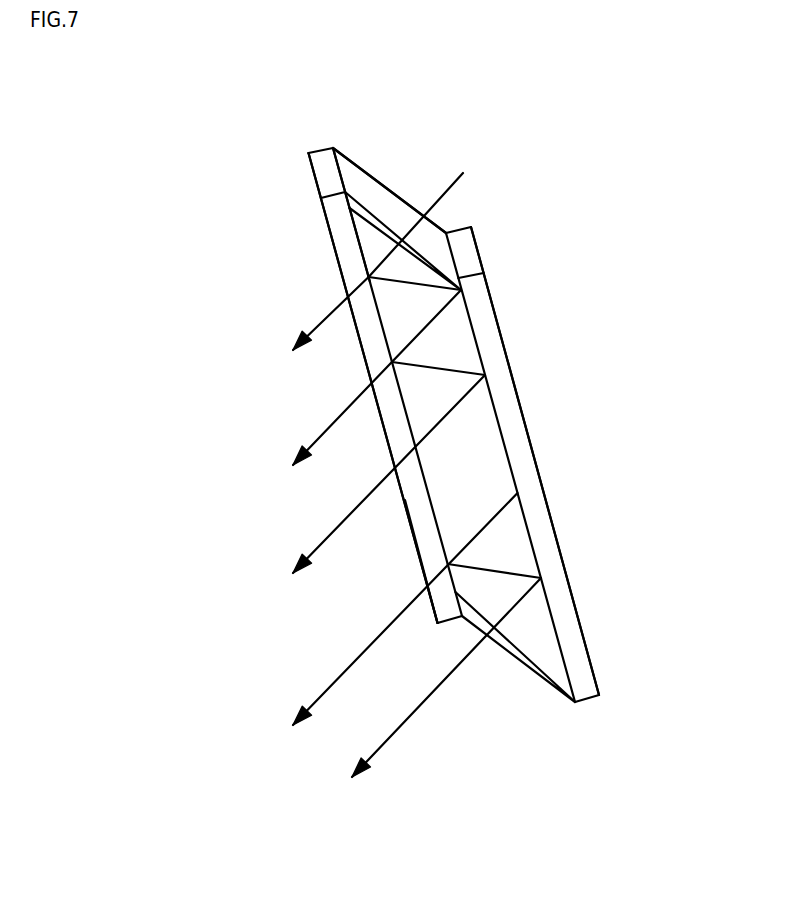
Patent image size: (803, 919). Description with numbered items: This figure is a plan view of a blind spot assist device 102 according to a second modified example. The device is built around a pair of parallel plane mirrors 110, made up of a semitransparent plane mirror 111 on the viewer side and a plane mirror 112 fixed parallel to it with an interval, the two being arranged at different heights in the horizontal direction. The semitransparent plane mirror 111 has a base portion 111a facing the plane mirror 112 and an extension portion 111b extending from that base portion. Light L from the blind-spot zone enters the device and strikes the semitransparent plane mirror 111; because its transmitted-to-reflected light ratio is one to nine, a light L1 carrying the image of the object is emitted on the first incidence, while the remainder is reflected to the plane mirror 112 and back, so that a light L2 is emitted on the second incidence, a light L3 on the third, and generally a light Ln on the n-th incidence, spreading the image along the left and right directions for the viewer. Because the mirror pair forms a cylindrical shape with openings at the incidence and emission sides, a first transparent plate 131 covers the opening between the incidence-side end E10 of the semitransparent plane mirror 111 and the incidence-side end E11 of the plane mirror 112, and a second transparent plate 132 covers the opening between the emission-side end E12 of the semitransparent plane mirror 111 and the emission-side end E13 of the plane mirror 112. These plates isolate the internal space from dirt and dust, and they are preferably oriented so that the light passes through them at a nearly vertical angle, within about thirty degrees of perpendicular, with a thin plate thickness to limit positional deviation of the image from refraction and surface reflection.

The blind spot assist device 102 is at (559, 424).
The pair of parallel plane mirrors 110 is at (684, 578).
The semitransparent plane mirror 111 is at (457, 592).
The base portion 111a is at (428, 546).
The extension portion 111b is at (342, 293).
The plane mirror 112 is at (543, 542).
The first transparent plate 131 is at (440, 234).
The second transparent plate 132 is at (552, 688).
The incidence-side end of the semitransparent plane mirror E10 is at (322, 165).
The incidence-side end of the plane mirror E11 is at (467, 252).
The emission-side end of the semitransparent plane mirror E12 is at (453, 620).
The emission-side end of the plane mirror E13 is at (597, 703).
The light L is at (446, 194).
The light L1 is at (320, 322).
The light L2 is at (331, 425).
The light L3 is at (354, 510).
The light Ln is at (352, 665).